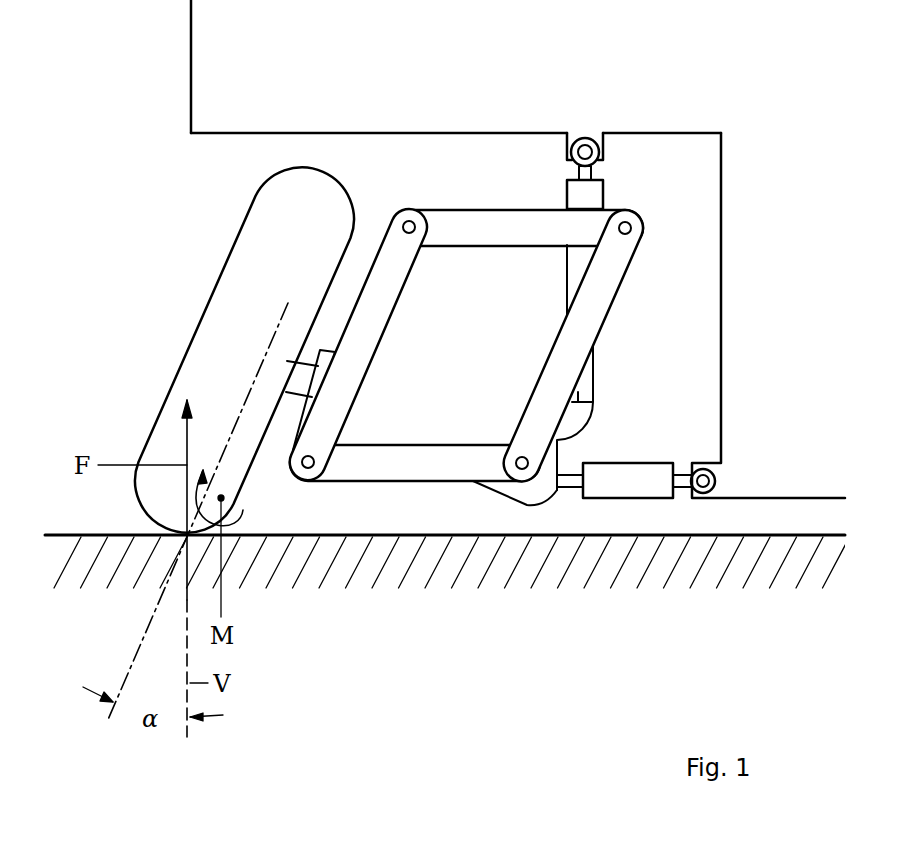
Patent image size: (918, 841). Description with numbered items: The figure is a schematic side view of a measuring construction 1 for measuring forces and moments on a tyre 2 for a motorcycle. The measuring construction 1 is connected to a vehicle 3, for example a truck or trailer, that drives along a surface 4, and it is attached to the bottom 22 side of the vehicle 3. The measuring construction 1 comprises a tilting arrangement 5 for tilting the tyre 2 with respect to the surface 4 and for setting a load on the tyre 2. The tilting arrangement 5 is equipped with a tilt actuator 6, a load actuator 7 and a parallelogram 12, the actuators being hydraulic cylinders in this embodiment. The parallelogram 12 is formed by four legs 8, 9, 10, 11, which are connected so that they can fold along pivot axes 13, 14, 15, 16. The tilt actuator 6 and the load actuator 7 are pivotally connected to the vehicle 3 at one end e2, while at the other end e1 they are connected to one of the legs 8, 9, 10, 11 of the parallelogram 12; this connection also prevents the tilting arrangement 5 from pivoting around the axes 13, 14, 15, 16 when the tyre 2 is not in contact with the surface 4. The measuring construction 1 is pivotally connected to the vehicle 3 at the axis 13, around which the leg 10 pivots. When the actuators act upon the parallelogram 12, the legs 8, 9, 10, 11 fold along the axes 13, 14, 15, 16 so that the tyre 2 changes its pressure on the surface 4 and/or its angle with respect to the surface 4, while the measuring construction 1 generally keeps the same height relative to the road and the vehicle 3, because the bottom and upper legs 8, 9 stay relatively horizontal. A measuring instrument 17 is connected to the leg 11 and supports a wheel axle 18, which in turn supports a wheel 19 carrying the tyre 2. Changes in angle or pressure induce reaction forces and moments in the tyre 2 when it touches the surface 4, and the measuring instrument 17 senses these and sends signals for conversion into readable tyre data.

The measuring construction 1 is at (193, 349).
The tyre 2 is at (193, 349).
The vehicle 3 is at (216, 77).
The surface 4 is at (363, 574).
The tilting arrangement 5 is at (472, 170).
The tilt actuator 6 is at (603, 195).
The load actuator 7 is at (630, 498).
The leg 8 is at (395, 462).
The leg 9 is at (533, 228).
The leg 10 is at (598, 288).
The leg 11 is at (385, 289).
The parallelogram 12 is at (447, 502).
The axis 13 is at (522, 469).
The axis 14 is at (308, 468).
The axis 15 is at (409, 221).
The axis 16 is at (631, 228).
The measuring instrument 17 is at (297, 405).
The wheel axle 18 is at (303, 376).
The wheel 19 is at (215, 282).
The bottom 22 is at (318, 133).
The end e1 is at (608, 400).
The end e2 is at (608, 152).